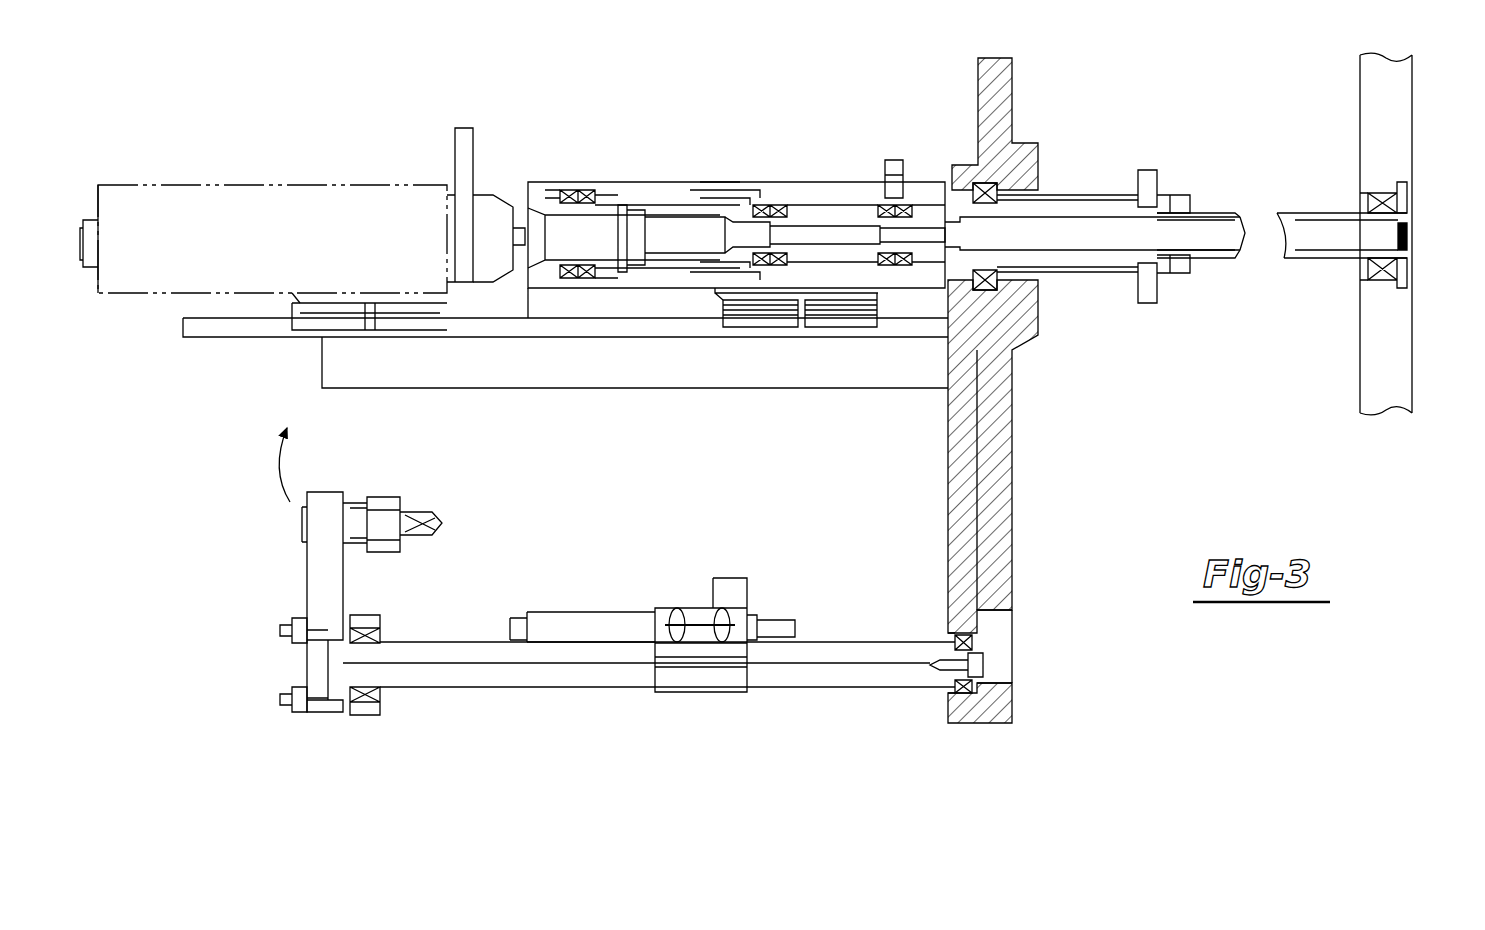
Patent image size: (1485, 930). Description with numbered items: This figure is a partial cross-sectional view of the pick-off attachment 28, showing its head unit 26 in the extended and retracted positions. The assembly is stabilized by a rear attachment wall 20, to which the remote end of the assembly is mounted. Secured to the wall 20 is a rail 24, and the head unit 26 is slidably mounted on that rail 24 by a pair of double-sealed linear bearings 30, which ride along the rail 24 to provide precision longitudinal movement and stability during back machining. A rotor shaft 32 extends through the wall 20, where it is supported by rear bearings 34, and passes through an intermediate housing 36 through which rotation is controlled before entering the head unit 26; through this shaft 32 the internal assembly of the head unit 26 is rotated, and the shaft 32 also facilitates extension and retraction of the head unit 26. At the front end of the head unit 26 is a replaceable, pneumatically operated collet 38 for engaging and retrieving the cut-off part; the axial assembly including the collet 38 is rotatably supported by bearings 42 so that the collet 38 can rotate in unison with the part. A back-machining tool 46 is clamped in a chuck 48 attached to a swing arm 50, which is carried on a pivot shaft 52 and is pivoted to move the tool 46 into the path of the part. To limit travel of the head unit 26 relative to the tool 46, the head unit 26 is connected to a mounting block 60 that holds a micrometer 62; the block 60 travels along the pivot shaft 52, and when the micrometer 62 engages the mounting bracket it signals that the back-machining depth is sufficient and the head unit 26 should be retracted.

The rear attachment wall 20 is at (1013, 495).
The rail 24 is at (324, 362).
The head unit 26 is at (255, 200).
The pick-off attachment 28 is at (1065, 172).
The double-sealed linear bearings 30 is at (826, 322).
The rotor shaft 32 is at (1312, 225).
The rear bearings 34 is at (1390, 262).
The intermediate housing 36 is at (1112, 282).
The pneumatically operated collet 38 is at (565, 215).
The bearings 42 is at (592, 280).
The tool 46 is at (434, 530).
The chuck 48 is at (385, 500).
The swing arm 50 is at (314, 591).
The pivot shaft 52 is at (448, 680).
The mounting block 60 is at (676, 678).
The micrometer 62 is at (545, 625).